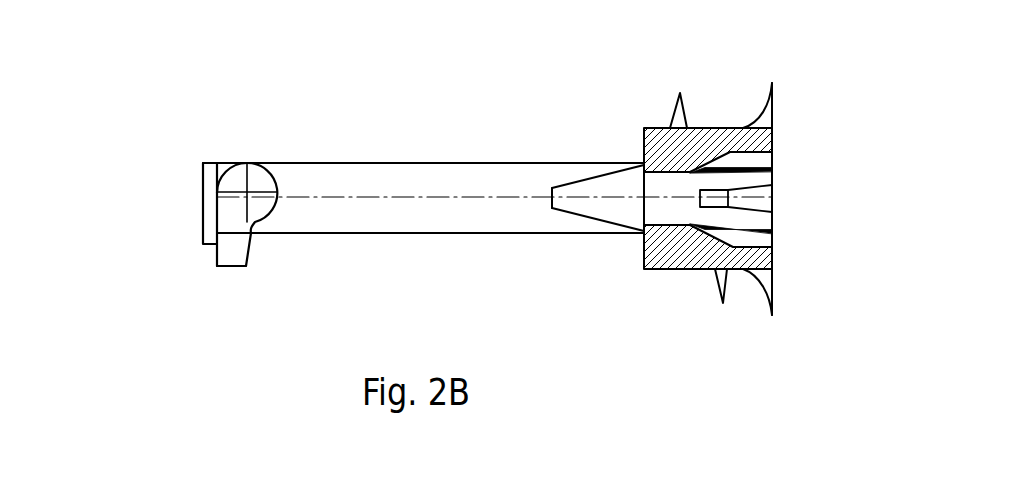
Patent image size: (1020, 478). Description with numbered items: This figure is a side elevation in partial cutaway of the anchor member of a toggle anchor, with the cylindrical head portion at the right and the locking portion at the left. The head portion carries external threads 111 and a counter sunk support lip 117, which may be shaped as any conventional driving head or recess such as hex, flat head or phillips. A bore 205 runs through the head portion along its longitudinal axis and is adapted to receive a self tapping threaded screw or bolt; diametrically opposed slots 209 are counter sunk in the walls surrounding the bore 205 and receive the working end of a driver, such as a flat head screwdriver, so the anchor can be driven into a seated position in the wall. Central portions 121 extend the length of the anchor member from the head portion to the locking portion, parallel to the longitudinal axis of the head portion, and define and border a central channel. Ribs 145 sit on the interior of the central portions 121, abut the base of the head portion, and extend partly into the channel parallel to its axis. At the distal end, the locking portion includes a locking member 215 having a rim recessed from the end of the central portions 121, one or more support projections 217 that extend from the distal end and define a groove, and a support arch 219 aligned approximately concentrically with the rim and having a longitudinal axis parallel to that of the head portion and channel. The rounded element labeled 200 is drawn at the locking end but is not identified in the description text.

The external threads 111 is at (725, 305).
The counter sunk support lip 117 is at (768, 315).
The central portions 121 is at (328, 157).
The ribs 145 is at (590, 208).
The ball end 200 is at (263, 180).
The bore 205 is at (772, 207).
The slots 209 is at (772, 158).
The locking member 215 is at (235, 185).
The support projections 217 is at (192, 192).
The support arch 219 is at (228, 266).